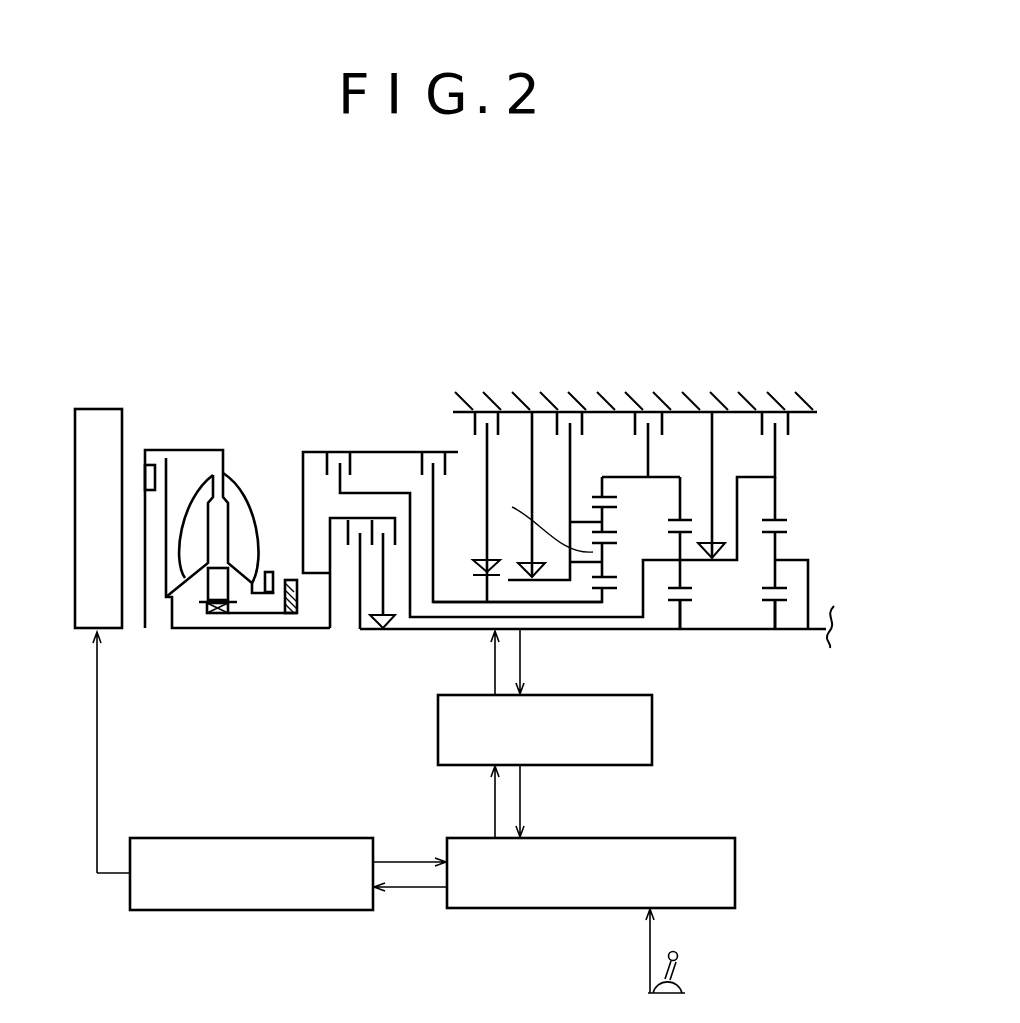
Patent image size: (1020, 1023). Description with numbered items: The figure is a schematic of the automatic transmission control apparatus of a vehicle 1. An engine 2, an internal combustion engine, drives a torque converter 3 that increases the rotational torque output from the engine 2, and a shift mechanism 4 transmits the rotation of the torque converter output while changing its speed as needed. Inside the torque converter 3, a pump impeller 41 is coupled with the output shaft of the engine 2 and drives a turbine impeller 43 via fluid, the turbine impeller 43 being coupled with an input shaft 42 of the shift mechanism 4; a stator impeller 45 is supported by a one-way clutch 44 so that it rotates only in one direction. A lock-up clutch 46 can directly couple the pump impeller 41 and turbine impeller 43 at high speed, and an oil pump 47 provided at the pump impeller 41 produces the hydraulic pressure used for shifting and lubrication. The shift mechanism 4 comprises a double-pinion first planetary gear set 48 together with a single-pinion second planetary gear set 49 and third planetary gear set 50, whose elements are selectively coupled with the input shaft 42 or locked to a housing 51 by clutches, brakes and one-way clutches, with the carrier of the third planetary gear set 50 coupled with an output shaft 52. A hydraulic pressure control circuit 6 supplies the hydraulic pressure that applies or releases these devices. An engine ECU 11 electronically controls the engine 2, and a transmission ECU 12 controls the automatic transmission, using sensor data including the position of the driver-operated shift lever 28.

The vehicle 1 is at (745, 283).
The engine 2 is at (98, 408).
The torque converter 3 is at (237, 538).
The shift mechanism 4 is at (572, 500).
The hydraulic pressure control circuit 6 is at (652, 753).
The engine ECU 11 is at (343, 910).
The transmission ECU 12 is at (735, 858).
The shift lever 28 is at (679, 955).
The pump impeller 41 is at (248, 478).
The input shaft 42 is at (255, 630).
The turbine impeller 43 is at (199, 480).
The one-way clutch 44 is at (220, 613).
The stator impeller 45 is at (205, 582).
The lock-up clutch 46 is at (148, 463).
The oil pump 47 is at (270, 570).
The first planetary gear set 48 is at (590, 606).
The second planetary gear set 49 is at (680, 634).
The third planetary gear set 50 is at (765, 634).
The housing 51 is at (295, 613).
The output shaft 52 is at (830, 640).